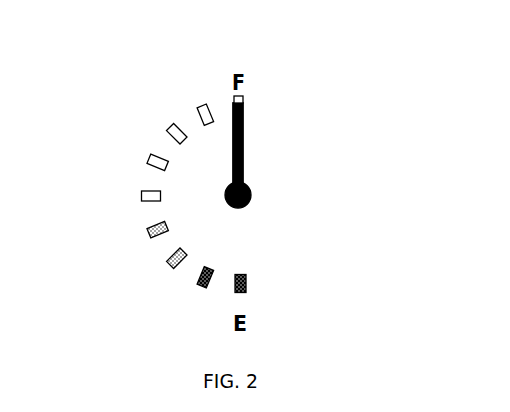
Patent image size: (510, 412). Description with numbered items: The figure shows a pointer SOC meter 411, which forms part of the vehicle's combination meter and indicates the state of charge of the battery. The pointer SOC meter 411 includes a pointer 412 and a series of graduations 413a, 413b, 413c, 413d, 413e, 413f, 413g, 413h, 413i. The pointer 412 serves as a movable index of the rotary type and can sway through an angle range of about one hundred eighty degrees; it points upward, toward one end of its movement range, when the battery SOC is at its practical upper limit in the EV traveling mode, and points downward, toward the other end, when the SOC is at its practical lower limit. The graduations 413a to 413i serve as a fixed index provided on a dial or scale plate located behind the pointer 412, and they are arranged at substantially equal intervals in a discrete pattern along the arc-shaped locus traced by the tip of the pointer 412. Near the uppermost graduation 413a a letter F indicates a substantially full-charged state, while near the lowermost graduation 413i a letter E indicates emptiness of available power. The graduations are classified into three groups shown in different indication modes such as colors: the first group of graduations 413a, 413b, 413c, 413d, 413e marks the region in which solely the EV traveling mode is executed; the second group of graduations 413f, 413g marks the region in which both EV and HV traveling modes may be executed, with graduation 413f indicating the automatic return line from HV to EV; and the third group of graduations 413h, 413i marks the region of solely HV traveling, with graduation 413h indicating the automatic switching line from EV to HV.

The pointer SOC meter 411 is at (280, 212).
The pointer 412 is at (243, 157).
The graduation 413a is at (243, 100).
The graduation 413b is at (201, 106).
The graduation 413c is at (172, 125).
The graduation 413d is at (152, 155).
The graduation 413e is at (142, 197).
The graduation 413f is at (152, 235).
The graduation 413g is at (172, 263).
The graduation 413h is at (200, 283).
The graduation 413i is at (245, 287).